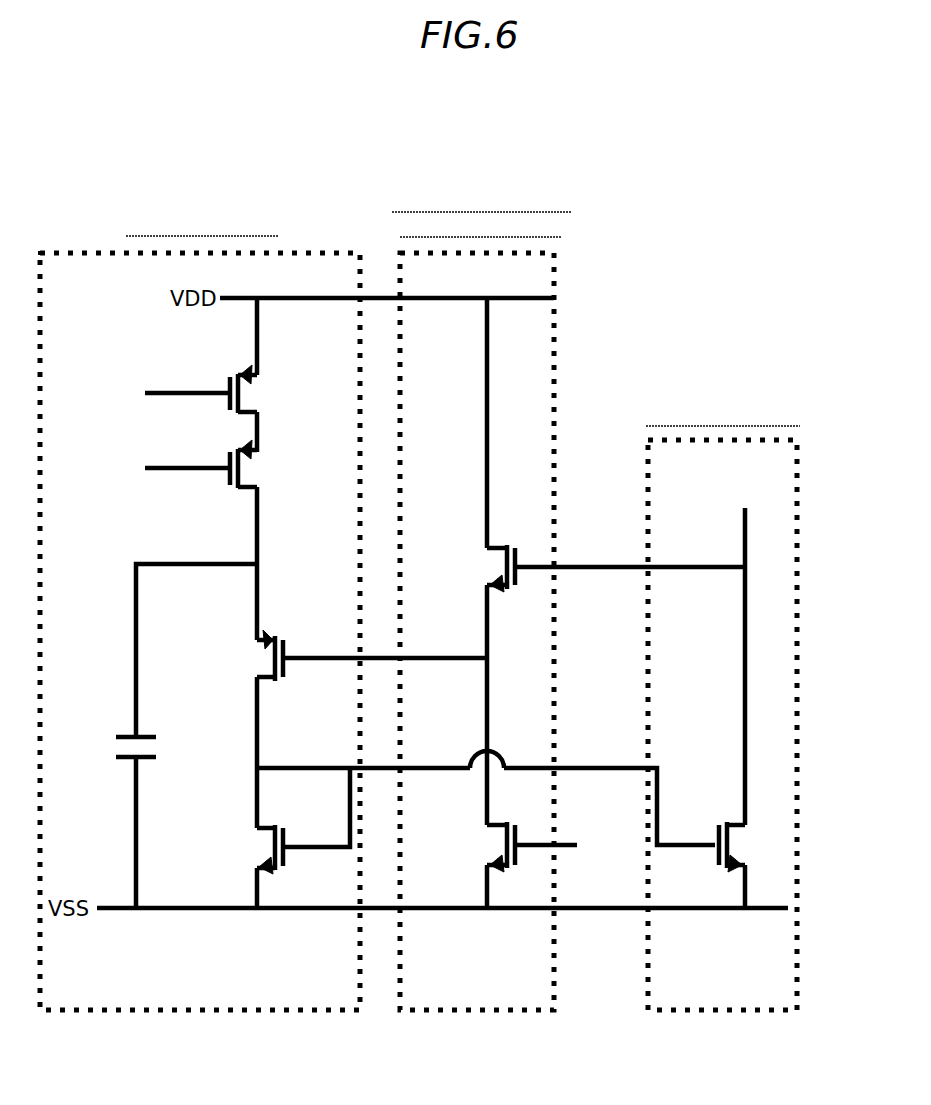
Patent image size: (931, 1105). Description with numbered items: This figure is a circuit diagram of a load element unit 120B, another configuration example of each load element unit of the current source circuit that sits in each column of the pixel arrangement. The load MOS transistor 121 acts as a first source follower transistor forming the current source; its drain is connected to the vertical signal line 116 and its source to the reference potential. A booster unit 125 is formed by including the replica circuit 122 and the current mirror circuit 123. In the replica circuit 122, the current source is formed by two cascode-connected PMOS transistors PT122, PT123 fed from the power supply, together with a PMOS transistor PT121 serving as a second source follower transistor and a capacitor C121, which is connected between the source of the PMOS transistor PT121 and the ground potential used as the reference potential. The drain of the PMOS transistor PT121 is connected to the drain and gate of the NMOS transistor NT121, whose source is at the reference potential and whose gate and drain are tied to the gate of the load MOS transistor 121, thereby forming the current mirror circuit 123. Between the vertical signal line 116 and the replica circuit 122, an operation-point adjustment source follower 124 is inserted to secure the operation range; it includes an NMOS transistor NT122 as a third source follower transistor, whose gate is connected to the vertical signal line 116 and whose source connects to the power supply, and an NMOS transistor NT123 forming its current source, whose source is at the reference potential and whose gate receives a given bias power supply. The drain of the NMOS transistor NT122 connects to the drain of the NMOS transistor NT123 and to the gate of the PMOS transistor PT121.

The load element unit 120B is at (490, 99).
The booster unit 125 is at (42, 250).
The operation-point adjustment source follower 124 is at (557, 262).
The vertical signal line 116 is at (748, 692).
The load MOS transistor 121 is at (746, 847).
The replica circuit 122 is at (154, 523).
The current mirror circuit 123 is at (288, 916).
The PMOS transistor PT121 is at (285, 636).
The PMOS transistor PT122 is at (248, 394).
The PMOS transistor PT123 is at (248, 469).
The NMOS transistor NT121 is at (255, 840).
The NMOS transistor NT122 is at (500, 568).
The NMOS transistor NT123 is at (500, 846).
The capacitor C121 is at (116, 752).